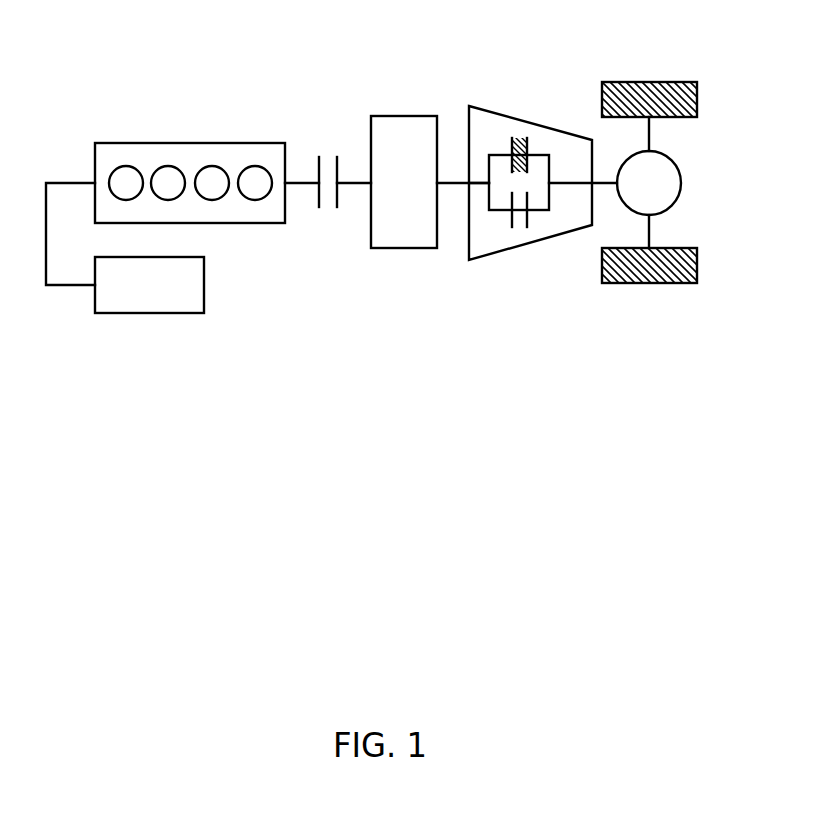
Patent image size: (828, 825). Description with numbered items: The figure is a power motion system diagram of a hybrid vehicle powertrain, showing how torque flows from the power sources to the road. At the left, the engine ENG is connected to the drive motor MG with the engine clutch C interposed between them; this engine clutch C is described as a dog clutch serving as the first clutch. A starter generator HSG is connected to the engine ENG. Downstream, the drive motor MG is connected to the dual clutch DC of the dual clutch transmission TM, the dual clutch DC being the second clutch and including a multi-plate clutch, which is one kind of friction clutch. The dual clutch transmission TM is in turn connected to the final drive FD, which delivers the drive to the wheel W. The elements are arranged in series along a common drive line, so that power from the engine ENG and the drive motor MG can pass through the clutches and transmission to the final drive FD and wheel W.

The engine ENG is at (190, 167).
The starter generator HSG is at (125, 248).
The engine clutch C is at (328, 198).
The drive motor MG is at (404, 182).
The transmission TM is at (530, 194).
The dual clutch DC is at (505, 145).
The final drive FD is at (649, 183).
The wheel W is at (649, 184).